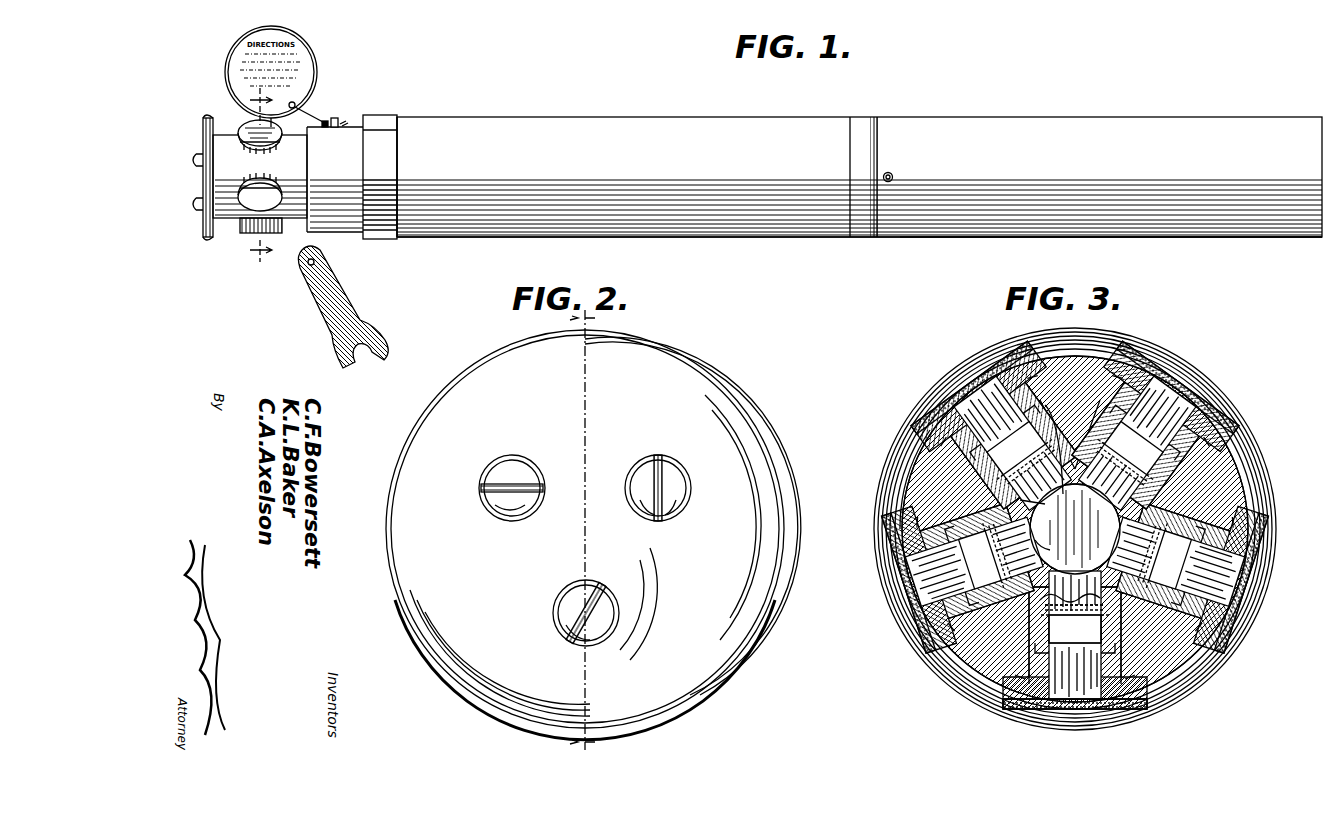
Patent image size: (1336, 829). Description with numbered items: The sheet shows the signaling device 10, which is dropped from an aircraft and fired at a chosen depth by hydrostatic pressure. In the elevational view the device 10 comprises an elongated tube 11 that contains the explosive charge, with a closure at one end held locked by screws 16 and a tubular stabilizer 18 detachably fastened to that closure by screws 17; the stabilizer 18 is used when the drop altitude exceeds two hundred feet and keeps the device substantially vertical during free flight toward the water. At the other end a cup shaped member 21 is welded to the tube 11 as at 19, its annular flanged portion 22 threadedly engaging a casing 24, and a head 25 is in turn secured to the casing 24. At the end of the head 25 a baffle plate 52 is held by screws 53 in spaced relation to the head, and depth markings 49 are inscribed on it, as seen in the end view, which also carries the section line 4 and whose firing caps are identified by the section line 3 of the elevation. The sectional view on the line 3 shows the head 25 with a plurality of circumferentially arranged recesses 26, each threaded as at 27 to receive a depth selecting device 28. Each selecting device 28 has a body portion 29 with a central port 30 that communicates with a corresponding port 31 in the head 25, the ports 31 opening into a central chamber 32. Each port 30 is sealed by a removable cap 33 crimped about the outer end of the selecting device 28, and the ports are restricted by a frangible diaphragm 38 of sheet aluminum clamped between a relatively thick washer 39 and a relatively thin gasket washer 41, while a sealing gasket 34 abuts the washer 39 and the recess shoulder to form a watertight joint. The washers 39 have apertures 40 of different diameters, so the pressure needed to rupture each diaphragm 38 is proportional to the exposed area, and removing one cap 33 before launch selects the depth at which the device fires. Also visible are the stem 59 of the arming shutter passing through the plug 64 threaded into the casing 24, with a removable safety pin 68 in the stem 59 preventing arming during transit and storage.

In FIG. 1, the section line 3— 3 is at (255, 175).
In FIG. 2, the section line 4— 4 is at (589, 532).
In FIG. 1, the signaling device 10 is at (694, 119).
In FIG. 2, the signaling device 10 is at (696, 354).
In FIG. 3, the signaling device 10 is at (866, 461).
In FIG. 1, the elongated tube 11 is at (603, 240).
In FIG. 1, the screws 16 is at (892, 174).
In FIG. 1, the screws 17 is at (885, 116).
In FIG. 1, the tubular stabilizer 18 is at (1115, 239).
In FIG. 1, the weld 19 is at (398, 118).
In FIG. 1, the cup shaped member 21 is at (380, 116).
In FIG. 1, the annular flanged portion 22 is at (385, 240).
In FIG. 3, the casing 24 is at (1108, 333).
In FIG. 1, the head 25 is at (228, 140).
In FIG. 3, the head 25 is at (935, 470).
In FIG. 3, the recesses 26 is at (1250, 480).
In FIG. 3, the threads 27 is at (1100, 395).
In FIG. 1, the depth selecting device 28 is at (273, 156).
In FIG. 3, the depth selecting device 28 is at (1027, 339).
In FIG. 3, the body portion 29 is at (1145, 360).
In FIG. 3, the port 30 is at (975, 368).
In FIG. 3, the ports 31 is at (1065, 470).
In FIG. 3, the central chamber 32 is at (1042, 548).
In FIG. 1, the cap 33 is at (255, 148).
In FIG. 3, the cap 33 is at (948, 385).
In FIG. 3, the sealing gasket 34 is at (1120, 516).
In FIG. 3, the frangible diaphragm 38 is at (1040, 450).
In FIG. 3, the thick washer 39 is at (1000, 535).
In FIG. 3, the apertures 40 is at (1030, 472).
In FIG. 3, the thin washer 41 is at (1078, 464).
In FIG. 2, the markings 49 is at (462, 375).
In FIG. 1, the baffle plate 52 is at (205, 120).
In FIG. 2, the baffle plate 52 is at (722, 670).
In FIG. 1, the screws 53 is at (196, 204).
In FIG. 2, the screws 53 is at (482, 475).
In FIG. 1, the stem 59 is at (336, 118).
In FIG. 1, the plug 64 is at (345, 123).
In FIG. 1, the safety pin 68 is at (327, 120).